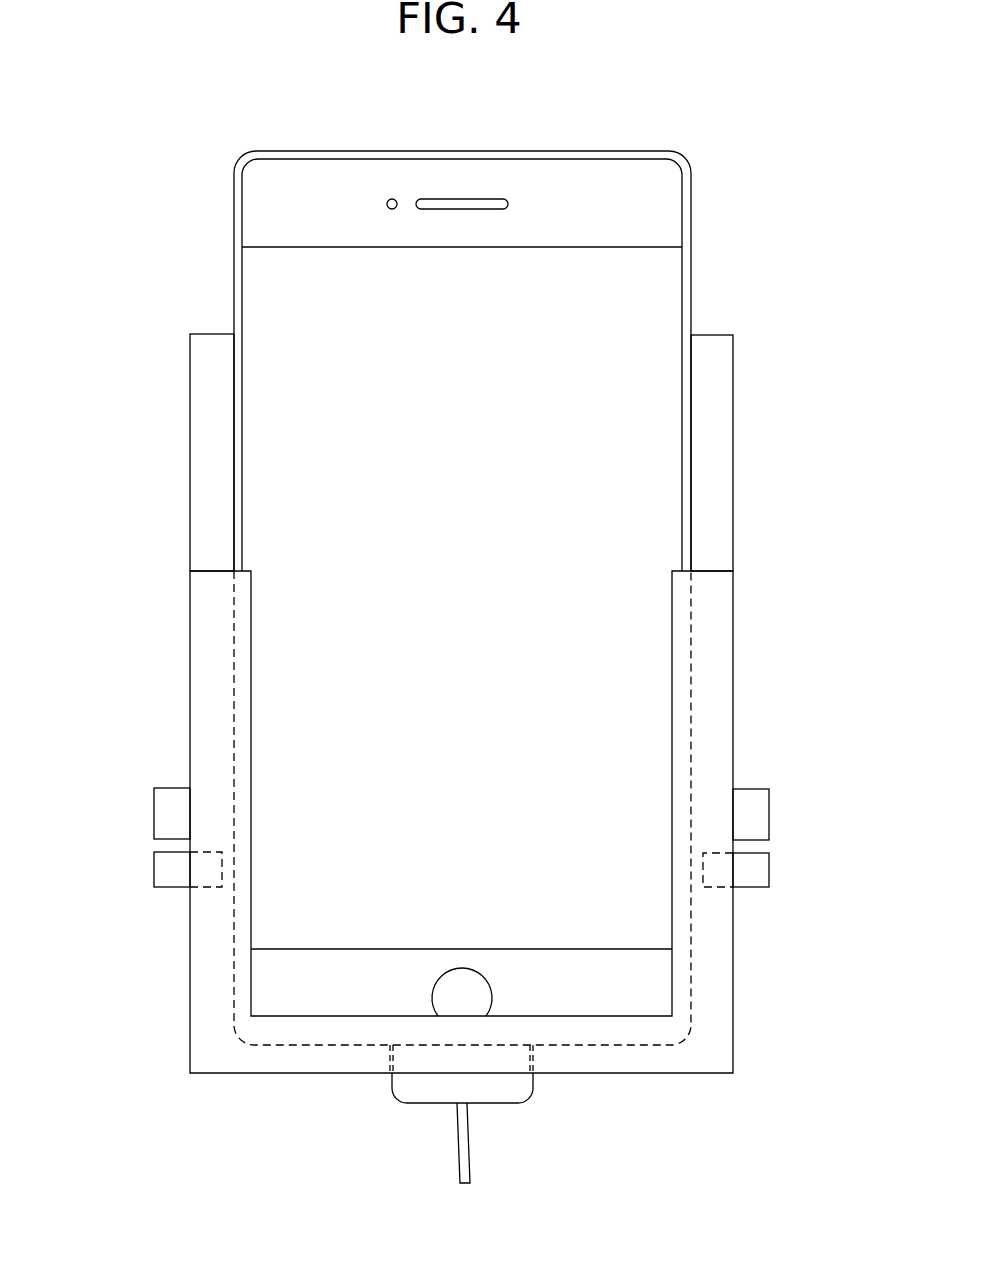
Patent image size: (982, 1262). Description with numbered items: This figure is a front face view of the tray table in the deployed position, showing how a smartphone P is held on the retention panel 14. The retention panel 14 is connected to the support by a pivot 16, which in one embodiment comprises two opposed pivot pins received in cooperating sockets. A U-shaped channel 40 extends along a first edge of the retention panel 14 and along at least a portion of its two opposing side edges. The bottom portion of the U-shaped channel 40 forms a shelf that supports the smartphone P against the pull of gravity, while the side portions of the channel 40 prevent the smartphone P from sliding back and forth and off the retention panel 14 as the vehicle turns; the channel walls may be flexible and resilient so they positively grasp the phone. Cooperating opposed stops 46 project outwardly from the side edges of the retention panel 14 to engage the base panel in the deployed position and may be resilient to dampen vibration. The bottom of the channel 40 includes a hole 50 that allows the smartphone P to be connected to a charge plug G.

The smartphone P is at (624, 170).
The retention panel 14 is at (713, 354).
The U-shaped channel 40 is at (717, 628).
The stops 46 is at (167, 802).
The pivot 16 is at (160, 873).
The hole 50 is at (388, 1062).
The charge plug G is at (503, 1093).